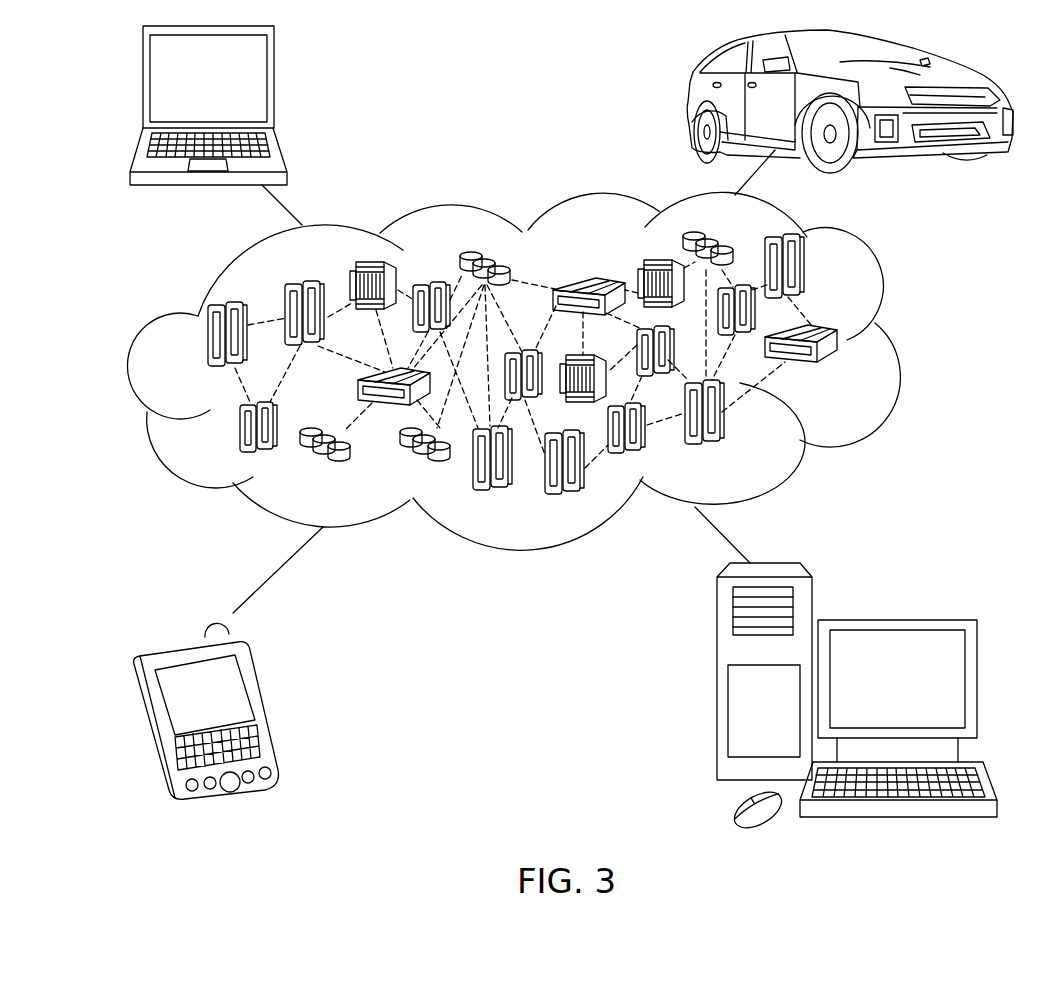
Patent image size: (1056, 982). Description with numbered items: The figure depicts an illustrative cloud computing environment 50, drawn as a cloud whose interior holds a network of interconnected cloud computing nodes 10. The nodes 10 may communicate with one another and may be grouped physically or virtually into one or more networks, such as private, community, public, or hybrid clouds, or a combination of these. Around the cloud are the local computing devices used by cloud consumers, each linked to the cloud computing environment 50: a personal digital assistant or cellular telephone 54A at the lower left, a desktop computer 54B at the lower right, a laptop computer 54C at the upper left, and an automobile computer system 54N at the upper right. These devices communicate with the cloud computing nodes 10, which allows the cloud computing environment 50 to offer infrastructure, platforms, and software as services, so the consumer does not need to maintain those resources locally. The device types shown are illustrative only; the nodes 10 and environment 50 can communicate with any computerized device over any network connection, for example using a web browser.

The cloud computing environment 50 is at (897, 357).
The cloud computing nodes 10 is at (848, 375).
The personal digital assistant (PDA) or cellular telephone 54A is at (263, 708).
The desktop computer 54B is at (953, 620).
The laptop computer 54C is at (276, 88).
The automobile computer system 54N is at (690, 92).